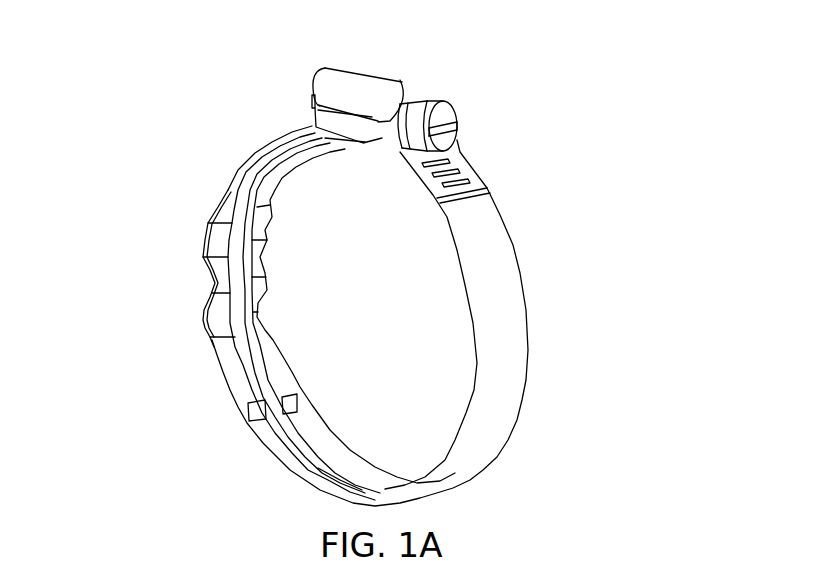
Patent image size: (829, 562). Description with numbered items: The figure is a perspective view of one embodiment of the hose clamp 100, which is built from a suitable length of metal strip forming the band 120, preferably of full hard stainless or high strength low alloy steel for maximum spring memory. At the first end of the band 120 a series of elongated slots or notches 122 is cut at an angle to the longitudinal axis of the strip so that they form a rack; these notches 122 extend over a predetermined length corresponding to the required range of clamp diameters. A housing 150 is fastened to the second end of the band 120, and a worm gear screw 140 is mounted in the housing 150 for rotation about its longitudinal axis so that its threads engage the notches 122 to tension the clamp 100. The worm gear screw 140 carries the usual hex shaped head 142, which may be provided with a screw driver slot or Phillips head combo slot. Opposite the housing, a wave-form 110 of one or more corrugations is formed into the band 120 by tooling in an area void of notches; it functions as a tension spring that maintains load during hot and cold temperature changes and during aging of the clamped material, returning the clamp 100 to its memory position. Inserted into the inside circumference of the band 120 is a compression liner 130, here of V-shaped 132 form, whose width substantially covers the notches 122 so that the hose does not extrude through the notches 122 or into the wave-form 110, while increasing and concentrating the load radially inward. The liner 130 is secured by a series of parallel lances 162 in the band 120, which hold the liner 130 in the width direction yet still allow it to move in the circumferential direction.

The hose clamp 100 is at (160, 232).
The wave-form 110 is at (203, 322).
The band 120 is at (520, 273).
The notches 122 is at (462, 181).
The compression liner 130 is at (243, 365).
The V-shaped 132 is at (350, 478).
The worm gear screw 140 is at (413, 98).
The hex shaped head 142 is at (447, 107).
The housing 150 is at (368, 77).
The lances 162 is at (248, 412).